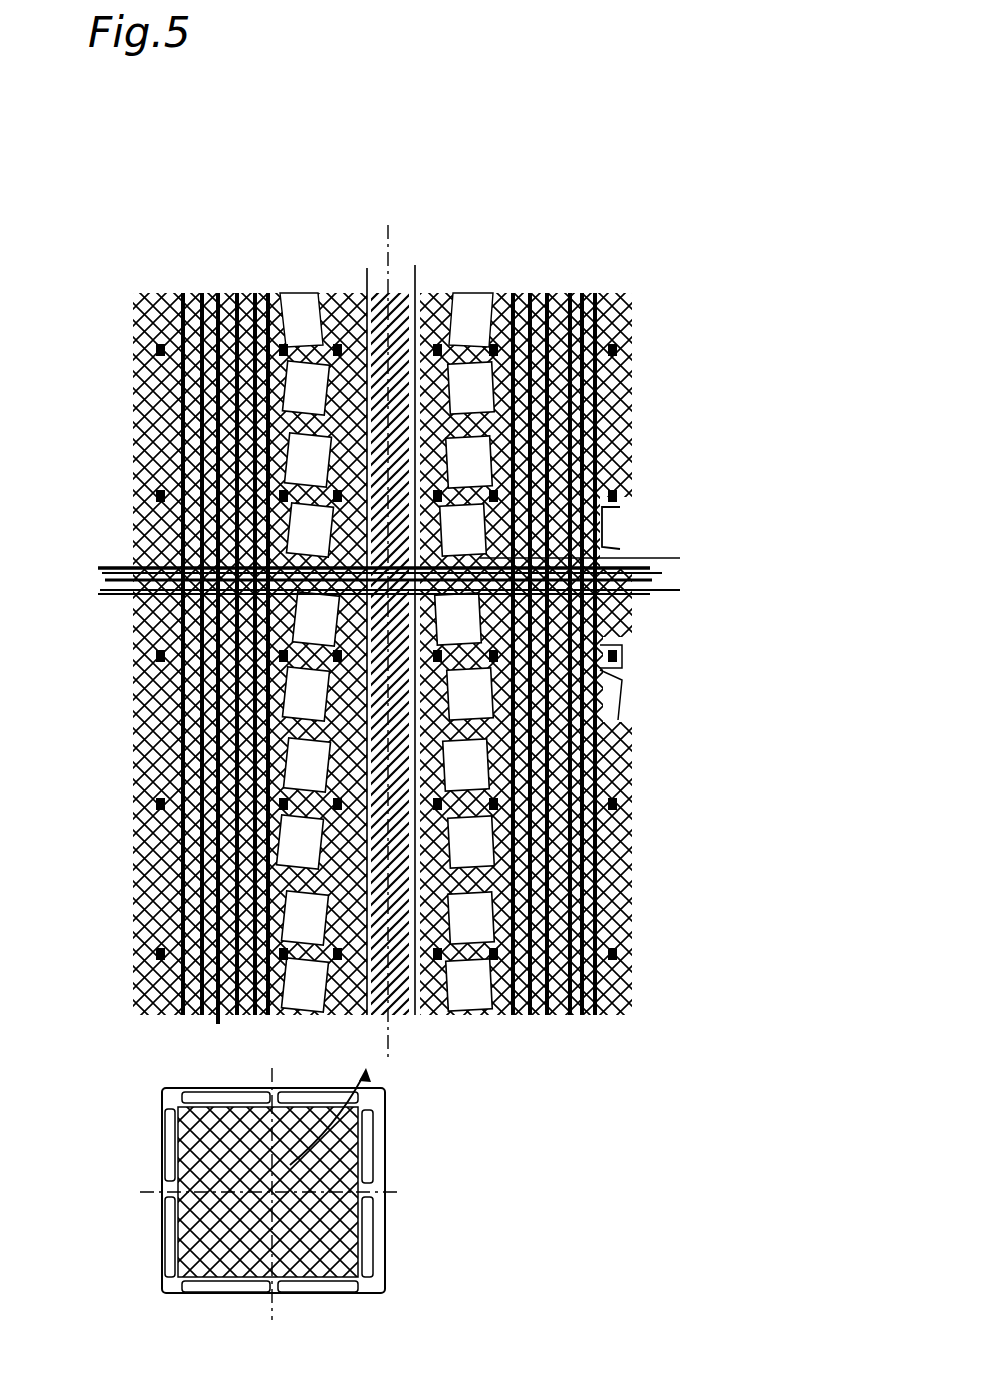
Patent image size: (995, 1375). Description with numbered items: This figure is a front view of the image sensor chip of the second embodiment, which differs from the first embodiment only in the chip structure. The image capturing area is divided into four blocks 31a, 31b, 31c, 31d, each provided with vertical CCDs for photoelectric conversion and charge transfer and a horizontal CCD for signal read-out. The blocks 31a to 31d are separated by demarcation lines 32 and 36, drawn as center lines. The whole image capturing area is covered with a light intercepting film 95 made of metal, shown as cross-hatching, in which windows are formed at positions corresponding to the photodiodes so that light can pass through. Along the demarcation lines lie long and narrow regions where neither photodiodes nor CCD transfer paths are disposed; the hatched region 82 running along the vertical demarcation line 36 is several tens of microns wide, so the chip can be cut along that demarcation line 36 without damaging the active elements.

The demarcation line 32 is at (388, 232).
The region 82 is at (410, 300).
The demarcation line 36 is at (695, 577).
The light intercepting film 95 is at (135, 895).
The block 31a is at (182, 1146).
The block 31b is at (358, 1160).
The block 31c is at (182, 1240).
The block 31d is at (357, 1242).